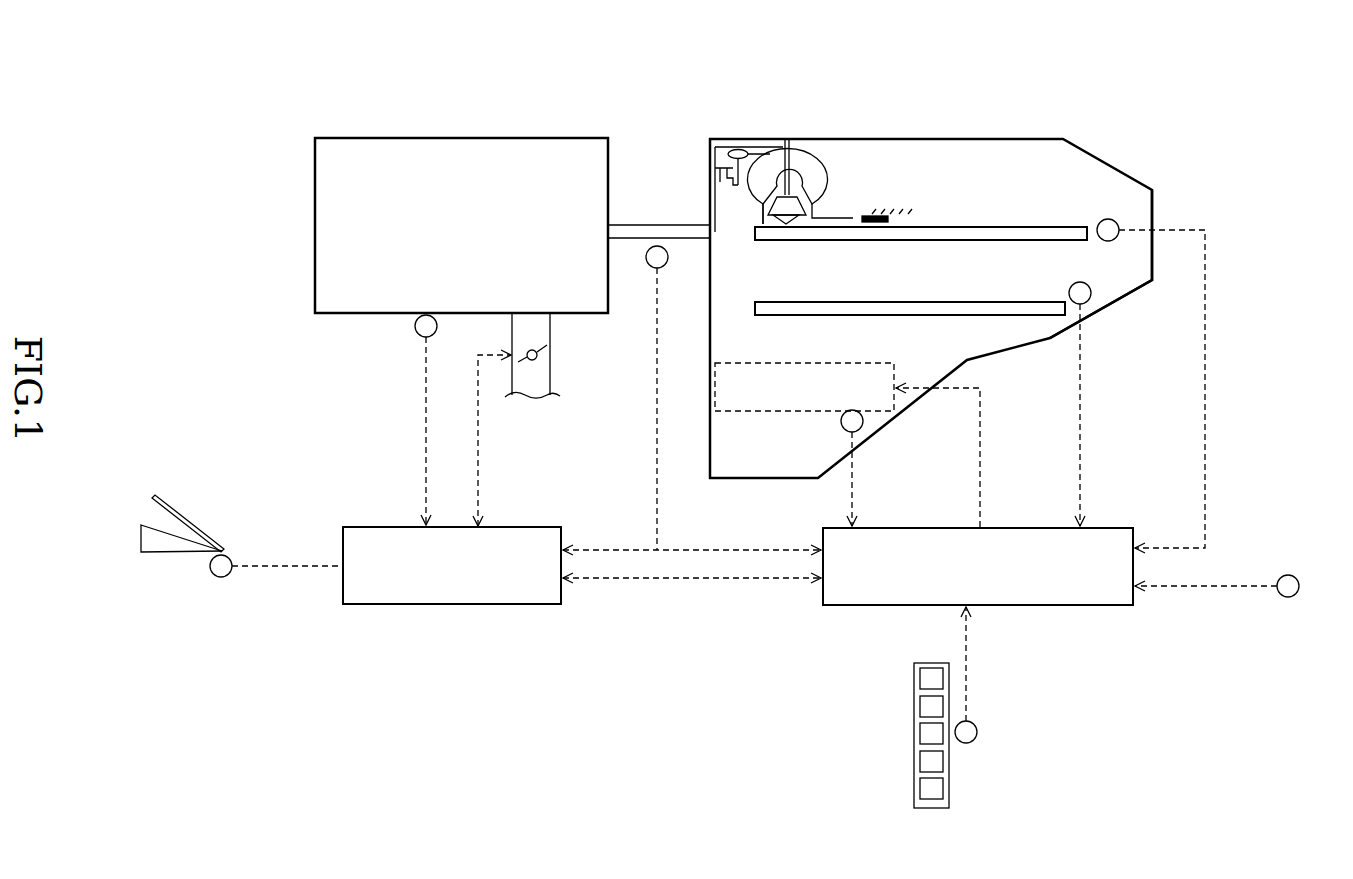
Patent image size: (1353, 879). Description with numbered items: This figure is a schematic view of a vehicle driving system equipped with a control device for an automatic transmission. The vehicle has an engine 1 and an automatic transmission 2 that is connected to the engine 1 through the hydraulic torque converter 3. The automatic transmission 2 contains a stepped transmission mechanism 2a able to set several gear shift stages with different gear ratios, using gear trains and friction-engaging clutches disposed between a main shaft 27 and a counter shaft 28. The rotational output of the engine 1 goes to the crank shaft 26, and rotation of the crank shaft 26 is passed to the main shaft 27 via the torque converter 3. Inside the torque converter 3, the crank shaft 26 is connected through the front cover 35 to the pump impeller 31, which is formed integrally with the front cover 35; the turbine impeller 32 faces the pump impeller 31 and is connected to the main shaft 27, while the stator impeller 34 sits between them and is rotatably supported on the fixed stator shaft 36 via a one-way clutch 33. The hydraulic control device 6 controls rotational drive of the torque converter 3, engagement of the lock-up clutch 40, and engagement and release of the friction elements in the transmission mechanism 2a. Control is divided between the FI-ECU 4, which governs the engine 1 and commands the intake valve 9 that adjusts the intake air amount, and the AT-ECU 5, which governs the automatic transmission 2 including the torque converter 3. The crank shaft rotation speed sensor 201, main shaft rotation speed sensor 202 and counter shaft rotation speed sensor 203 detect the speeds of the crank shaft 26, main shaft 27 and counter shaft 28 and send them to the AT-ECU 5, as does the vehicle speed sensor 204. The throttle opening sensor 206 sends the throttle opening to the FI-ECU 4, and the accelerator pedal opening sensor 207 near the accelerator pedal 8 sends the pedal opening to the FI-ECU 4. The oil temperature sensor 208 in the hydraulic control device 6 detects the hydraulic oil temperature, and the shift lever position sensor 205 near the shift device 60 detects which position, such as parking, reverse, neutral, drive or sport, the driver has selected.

The engine 1 is at (486, 138).
The automatic transmission 2 is at (952, 139).
The stepped transmission mechanism 2a is at (1012, 200).
The torque converter 3 is at (804, 168).
The FI-ECU 4 is at (508, 527).
The AT-ECU 5 is at (824, 530).
The hydraulic control device 6 is at (787, 412).
The accelerator pedal 8 is at (158, 498).
The intake valve 9 is at (542, 354).
The crank shaft 26 is at (637, 225).
The main shaft 27 is at (932, 228).
The counter shaft 28 is at (926, 302).
The pump impeller 31 is at (797, 148).
The turbine impeller 32 is at (779, 139).
The one-way clutch 33 is at (788, 224).
The stator impeller 34 is at (764, 216).
The front cover 35 is at (728, 139).
The stator shaft 36 is at (864, 216).
The lock-up clutch 40 is at (706, 158).
The shift device 60 is at (912, 746).
The crank shaft rotation speed sensor 201 is at (651, 266).
The main shaft rotation speed sensor 202 is at (1118, 225).
The counter shaft rotation speed sensor 203 is at (1090, 287).
The vehicle speed sensor 204 is at (1295, 577).
The shift lever position sensor 205 is at (978, 733).
The throttle opening sensor 206 is at (418, 335).
The accelerator pedal opening sensor 207 is at (223, 578).
The oil temperature sensor 208 is at (861, 428).